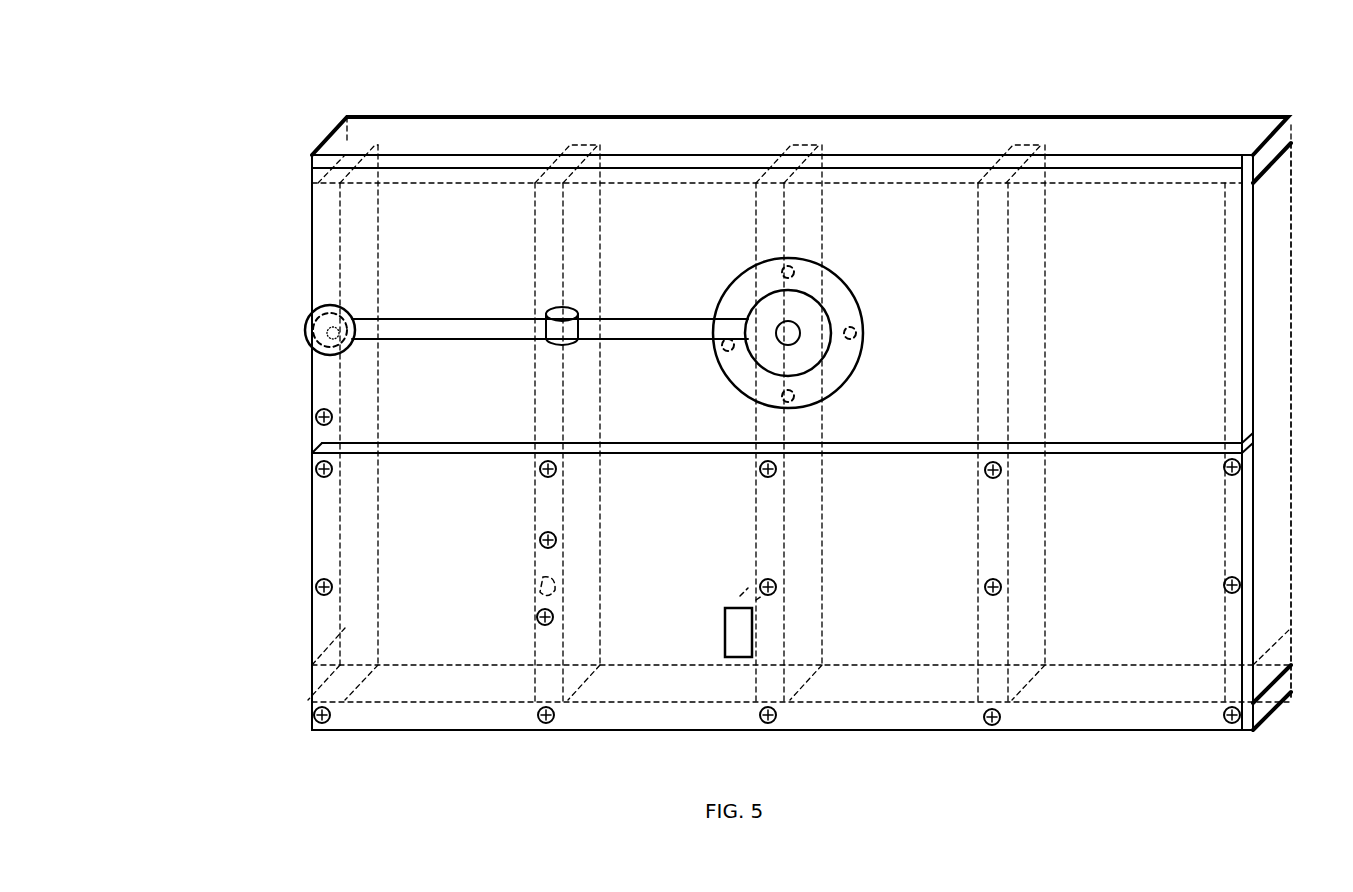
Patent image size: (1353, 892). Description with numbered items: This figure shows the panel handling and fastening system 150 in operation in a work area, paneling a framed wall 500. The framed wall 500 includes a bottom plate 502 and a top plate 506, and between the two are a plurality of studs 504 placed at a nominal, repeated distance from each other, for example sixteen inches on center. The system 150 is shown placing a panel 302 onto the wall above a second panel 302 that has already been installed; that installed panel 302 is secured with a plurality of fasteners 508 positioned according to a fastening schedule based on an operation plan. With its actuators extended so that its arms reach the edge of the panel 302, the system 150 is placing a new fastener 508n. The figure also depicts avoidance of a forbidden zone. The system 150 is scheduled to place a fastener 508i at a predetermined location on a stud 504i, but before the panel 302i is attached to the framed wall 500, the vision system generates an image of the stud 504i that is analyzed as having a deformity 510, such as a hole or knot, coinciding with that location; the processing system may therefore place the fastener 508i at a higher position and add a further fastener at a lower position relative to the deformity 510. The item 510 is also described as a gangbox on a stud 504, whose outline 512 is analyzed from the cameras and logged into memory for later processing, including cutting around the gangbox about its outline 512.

The framed wall 500 is at (180, 97).
The top plate 506 is at (335, 123).
The panel 302 is at (1247, 300).
The panel 302i is at (1248, 503).
The bottom plate 502 is at (498, 672).
The stud 504 is at (755, 548).
The stud 504i is at (540, 520).
The panel handling and fastening system 150 is at (735, 266).
The fastener 508n is at (312, 318).
The fastener 508 is at (315, 580).
The fastener 508i is at (540, 542).
The deformity 510 is at (540, 585).
The outline 512 is at (725, 632).